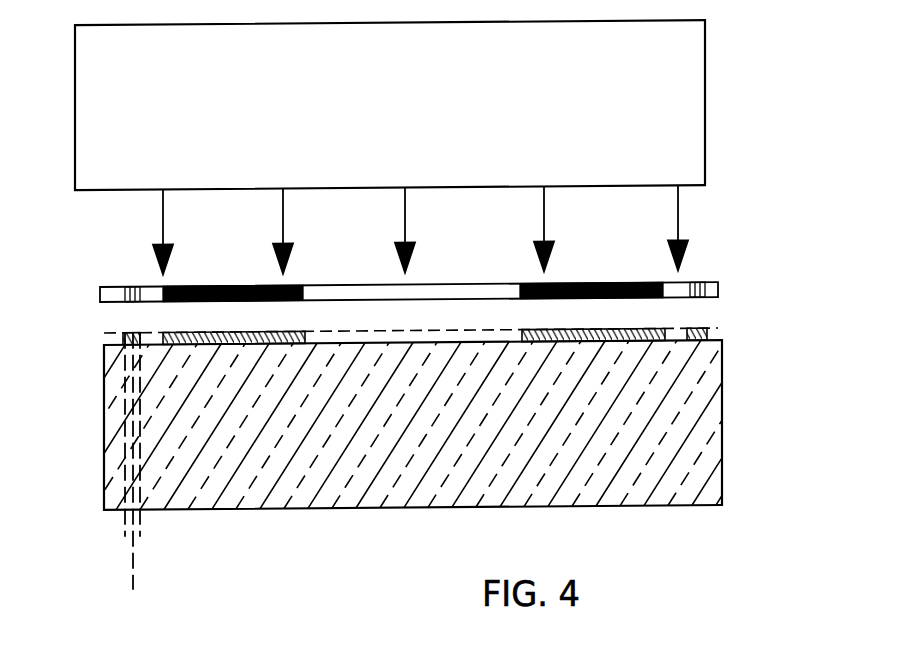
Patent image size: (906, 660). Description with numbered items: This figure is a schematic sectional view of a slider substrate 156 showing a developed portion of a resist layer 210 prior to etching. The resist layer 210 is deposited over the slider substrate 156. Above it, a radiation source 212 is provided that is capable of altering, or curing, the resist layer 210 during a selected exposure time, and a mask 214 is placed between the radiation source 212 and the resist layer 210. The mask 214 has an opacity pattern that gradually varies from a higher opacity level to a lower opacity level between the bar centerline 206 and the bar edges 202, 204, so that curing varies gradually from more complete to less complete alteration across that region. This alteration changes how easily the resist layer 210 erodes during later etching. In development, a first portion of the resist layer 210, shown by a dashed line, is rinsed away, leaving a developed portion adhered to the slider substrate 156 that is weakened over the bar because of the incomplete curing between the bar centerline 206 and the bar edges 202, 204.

The radiation source 212 is at (705, 100).
The mask 214 is at (718, 284).
The resist layer 210 is at (710, 333).
The slider substrate 156 is at (723, 440).
The bar edge 202 is at (126, 535).
The bar edge 204 is at (141, 537).
The bar centerline 206 is at (133, 590).